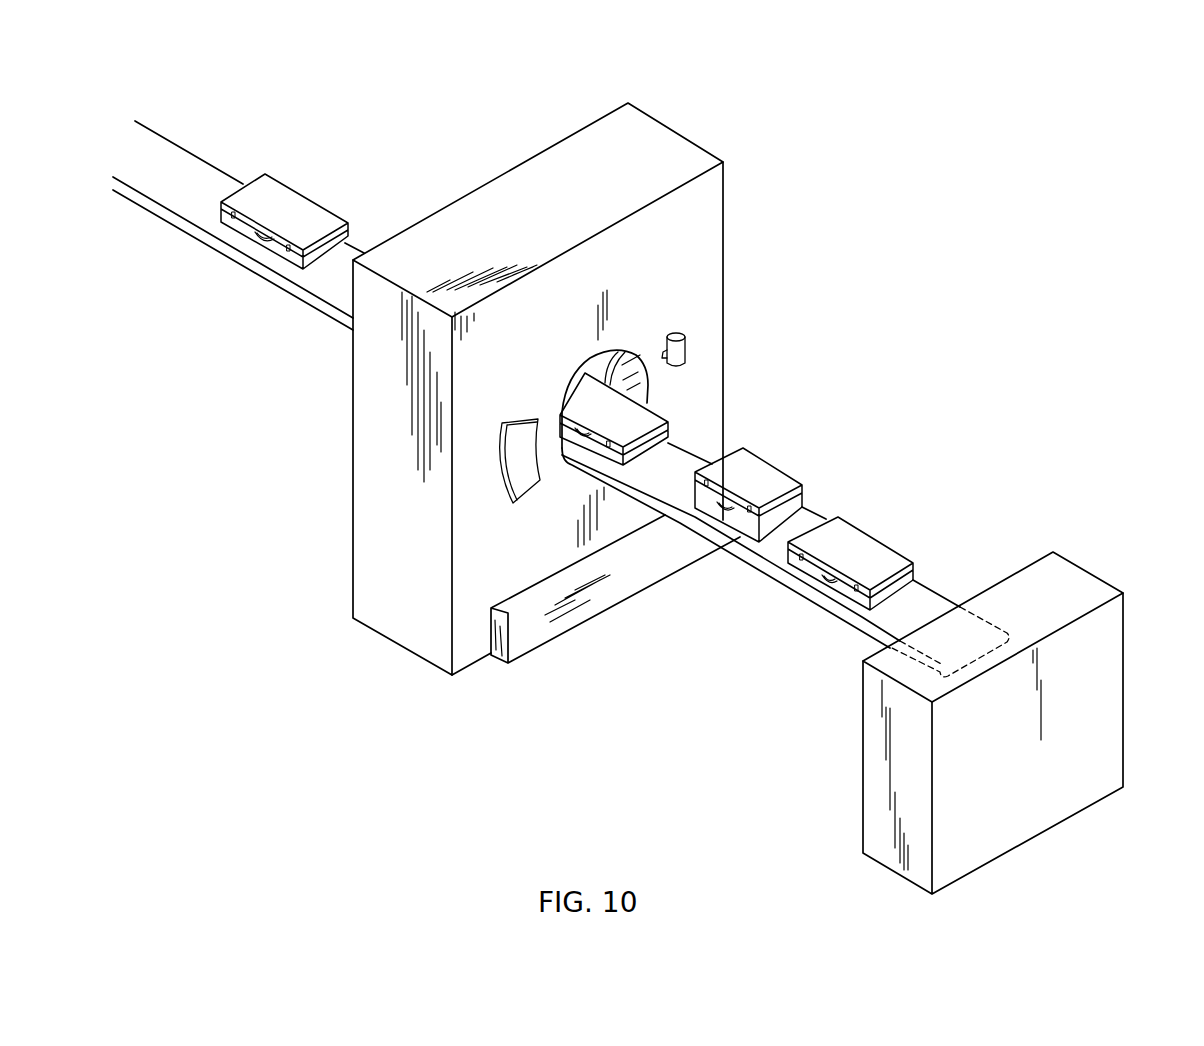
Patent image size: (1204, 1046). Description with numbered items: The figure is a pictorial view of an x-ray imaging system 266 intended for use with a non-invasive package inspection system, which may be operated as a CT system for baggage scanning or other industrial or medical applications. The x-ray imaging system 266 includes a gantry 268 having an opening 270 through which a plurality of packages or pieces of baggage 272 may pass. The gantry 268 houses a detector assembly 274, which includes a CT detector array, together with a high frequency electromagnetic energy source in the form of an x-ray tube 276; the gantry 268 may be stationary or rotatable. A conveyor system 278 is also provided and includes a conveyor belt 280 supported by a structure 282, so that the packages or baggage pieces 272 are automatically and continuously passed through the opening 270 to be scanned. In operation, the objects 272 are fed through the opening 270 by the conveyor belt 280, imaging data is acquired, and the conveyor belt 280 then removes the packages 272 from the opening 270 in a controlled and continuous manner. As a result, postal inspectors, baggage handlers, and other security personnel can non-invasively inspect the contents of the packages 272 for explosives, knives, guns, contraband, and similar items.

The x-ray imaging system 266 is at (896, 391).
The gantry 268 is at (661, 266).
The opening 270 is at (628, 348).
The packages or pieces of baggage 272 is at (293, 207).
The detector assembly 274 is at (522, 435).
The x-ray tube 276 is at (687, 350).
The conveyor system 278 is at (153, 252).
The conveyor belt 280 is at (330, 282).
The structure 282 is at (1124, 661).